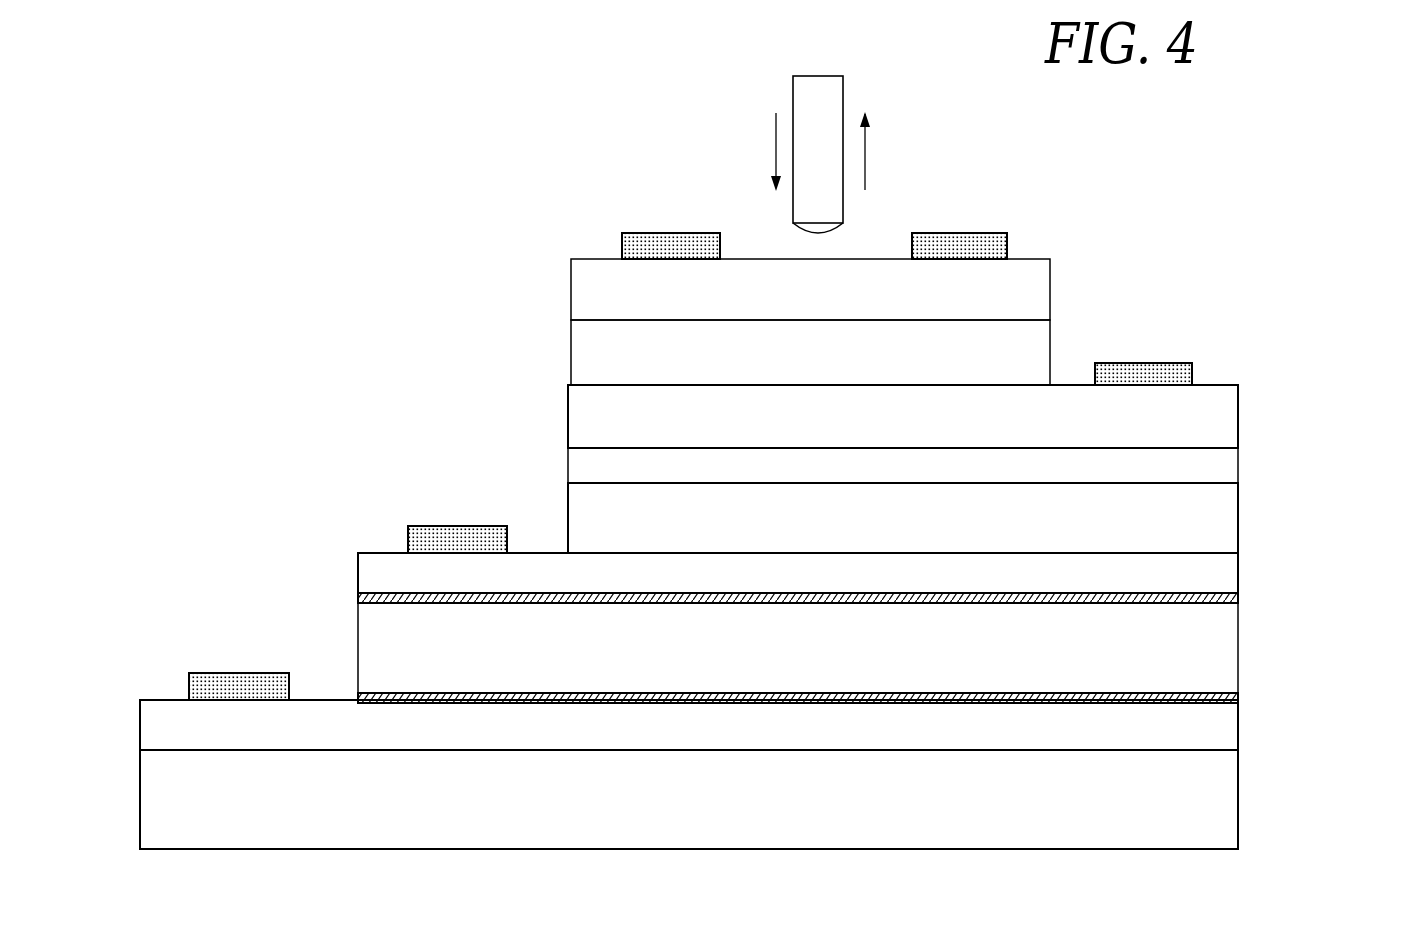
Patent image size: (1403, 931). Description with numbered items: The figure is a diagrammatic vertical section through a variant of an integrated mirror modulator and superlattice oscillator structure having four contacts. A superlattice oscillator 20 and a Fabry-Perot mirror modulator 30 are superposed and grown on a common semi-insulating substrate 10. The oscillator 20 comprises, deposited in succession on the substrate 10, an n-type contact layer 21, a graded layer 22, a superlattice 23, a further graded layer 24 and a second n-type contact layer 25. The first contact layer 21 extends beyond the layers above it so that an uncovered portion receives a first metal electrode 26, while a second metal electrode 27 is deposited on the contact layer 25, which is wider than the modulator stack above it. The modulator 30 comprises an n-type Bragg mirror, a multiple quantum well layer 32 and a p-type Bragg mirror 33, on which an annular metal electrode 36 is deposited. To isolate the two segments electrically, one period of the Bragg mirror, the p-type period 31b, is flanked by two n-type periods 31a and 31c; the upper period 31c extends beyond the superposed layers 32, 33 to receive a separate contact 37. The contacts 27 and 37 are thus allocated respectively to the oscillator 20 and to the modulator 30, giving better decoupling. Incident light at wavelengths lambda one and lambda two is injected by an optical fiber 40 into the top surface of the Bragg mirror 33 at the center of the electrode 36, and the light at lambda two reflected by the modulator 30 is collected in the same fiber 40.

The substrate 10 is at (1220, 814).
The superlattice oscillator 20 is at (766, 653).
The n-type contact layer 21 is at (1228, 725).
The graded layer 22 is at (1226, 700).
The superlattice 23 is at (1224, 655).
The graded layer 24 is at (1226, 600).
The n-type contact layer 25 is at (834, 569).
The first metal electrode 26 is at (240, 688).
The second metal electrode 27 is at (455, 538).
The Fabry-Perot mirror modulator 30 is at (985, 409).
The n-type period 31a is at (1213, 518).
The p-type period 31b is at (1213, 470).
The n-type period 31c is at (1213, 410).
The multiple quantum well layer 32 is at (590, 346).
The p-type Bragg mirror 33 is at (590, 283).
The annular metal electrode 36 is at (670, 235).
The contact 37 is at (1140, 375).
The optical fiber 40 is at (818, 82).